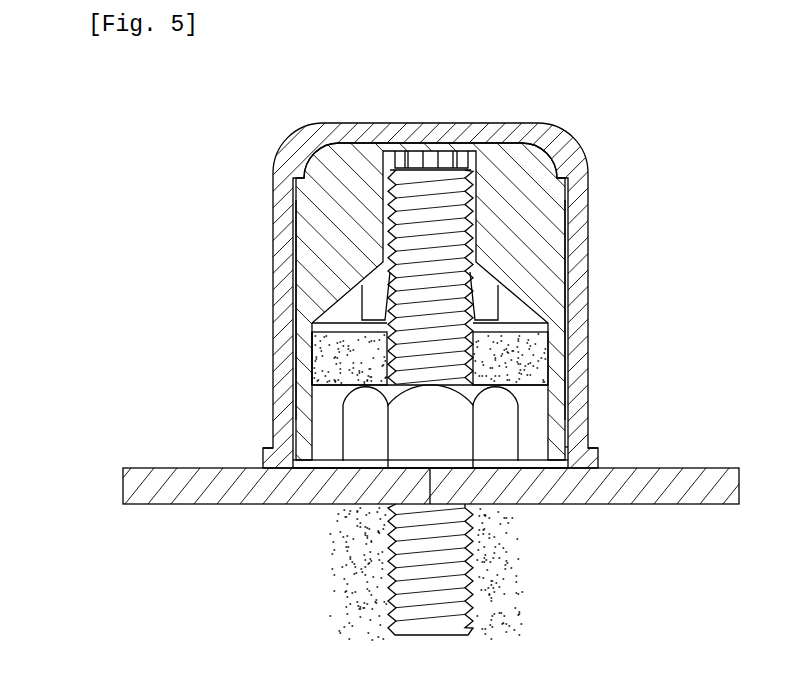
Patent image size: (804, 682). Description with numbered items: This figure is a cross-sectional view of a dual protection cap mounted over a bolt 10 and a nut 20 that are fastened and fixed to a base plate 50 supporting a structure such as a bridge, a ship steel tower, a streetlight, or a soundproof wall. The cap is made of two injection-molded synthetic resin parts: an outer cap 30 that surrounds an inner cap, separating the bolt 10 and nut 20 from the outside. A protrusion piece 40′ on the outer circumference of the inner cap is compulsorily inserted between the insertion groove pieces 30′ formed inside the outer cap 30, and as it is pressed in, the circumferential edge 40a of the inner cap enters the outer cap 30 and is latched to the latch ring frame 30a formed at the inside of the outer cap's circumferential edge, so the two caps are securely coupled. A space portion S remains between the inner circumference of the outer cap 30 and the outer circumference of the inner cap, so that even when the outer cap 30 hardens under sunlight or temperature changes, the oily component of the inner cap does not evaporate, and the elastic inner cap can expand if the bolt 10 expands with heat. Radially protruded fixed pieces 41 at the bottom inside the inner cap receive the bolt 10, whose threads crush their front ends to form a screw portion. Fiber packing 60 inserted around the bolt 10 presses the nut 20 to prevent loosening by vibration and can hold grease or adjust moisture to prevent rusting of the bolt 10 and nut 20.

The bolt 10 is at (452, 210).
The nut 20 is at (362, 443).
The outer cap 30 is at (573, 273).
The insertion groove piece 30′ is at (312, 357).
The latch ring frame 30a is at (298, 473).
The protrusion piece 40′ is at (302, 207).
The circumferential edge 40a is at (263, 449).
The fixed piece 41 is at (338, 193).
The base plate 50 is at (164, 493).
The fiber packing 60 is at (534, 357).
The space portion S is at (567, 447).